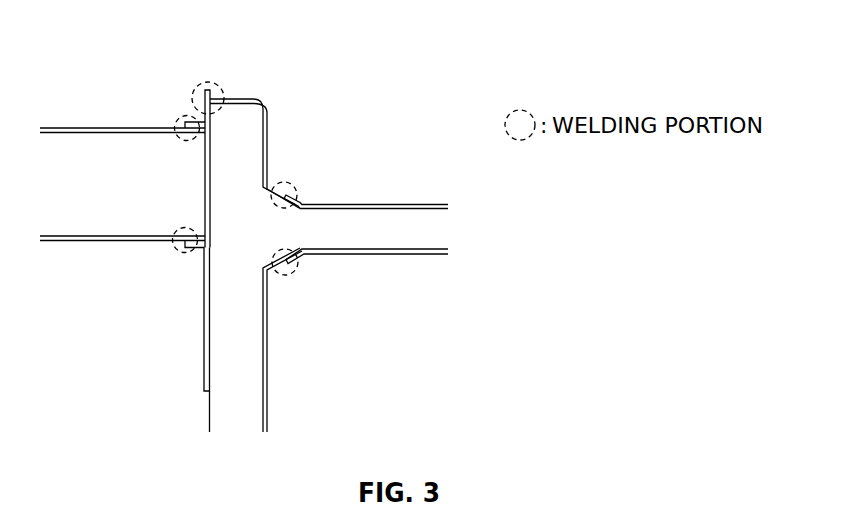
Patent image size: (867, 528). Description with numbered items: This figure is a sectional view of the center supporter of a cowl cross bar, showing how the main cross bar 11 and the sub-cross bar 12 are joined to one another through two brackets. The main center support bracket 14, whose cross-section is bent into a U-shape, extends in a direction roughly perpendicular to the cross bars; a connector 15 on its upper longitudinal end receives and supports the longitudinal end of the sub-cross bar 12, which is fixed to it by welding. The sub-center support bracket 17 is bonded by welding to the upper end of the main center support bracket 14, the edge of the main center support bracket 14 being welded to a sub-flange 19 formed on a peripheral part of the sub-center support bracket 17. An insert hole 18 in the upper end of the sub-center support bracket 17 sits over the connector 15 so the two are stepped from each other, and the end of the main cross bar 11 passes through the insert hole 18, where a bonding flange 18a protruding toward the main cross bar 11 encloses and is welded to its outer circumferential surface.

The main cross bar 11 is at (66, 128).
The sub-cross bar 12 is at (394, 204).
The main center support bracket 14 is at (276, 129).
The connector 15 is at (286, 182).
The sub-center support bracket 17 is at (208, 312).
The insert hole 18 is at (211, 138).
The bonding flange 18a is at (187, 121).
The sub-flange 19 is at (203, 93).